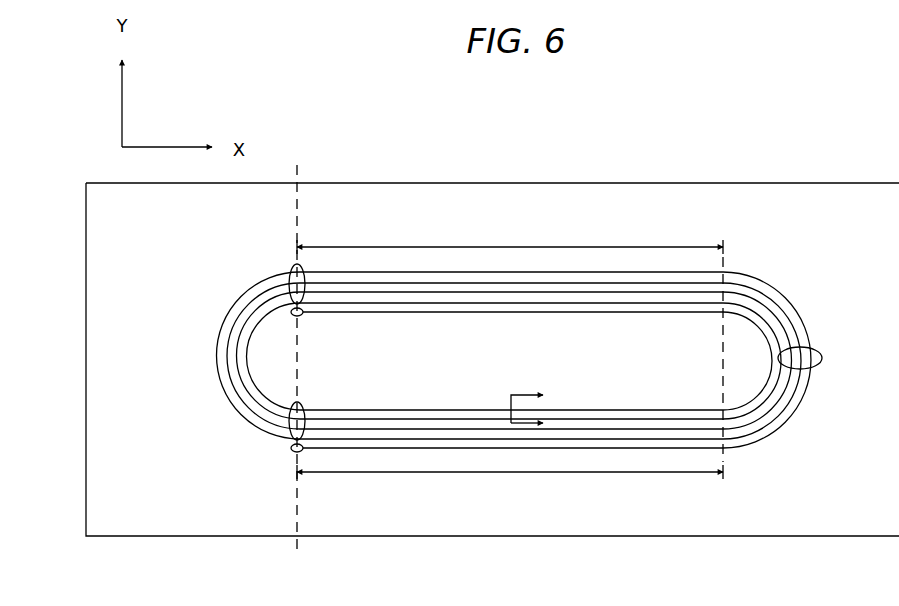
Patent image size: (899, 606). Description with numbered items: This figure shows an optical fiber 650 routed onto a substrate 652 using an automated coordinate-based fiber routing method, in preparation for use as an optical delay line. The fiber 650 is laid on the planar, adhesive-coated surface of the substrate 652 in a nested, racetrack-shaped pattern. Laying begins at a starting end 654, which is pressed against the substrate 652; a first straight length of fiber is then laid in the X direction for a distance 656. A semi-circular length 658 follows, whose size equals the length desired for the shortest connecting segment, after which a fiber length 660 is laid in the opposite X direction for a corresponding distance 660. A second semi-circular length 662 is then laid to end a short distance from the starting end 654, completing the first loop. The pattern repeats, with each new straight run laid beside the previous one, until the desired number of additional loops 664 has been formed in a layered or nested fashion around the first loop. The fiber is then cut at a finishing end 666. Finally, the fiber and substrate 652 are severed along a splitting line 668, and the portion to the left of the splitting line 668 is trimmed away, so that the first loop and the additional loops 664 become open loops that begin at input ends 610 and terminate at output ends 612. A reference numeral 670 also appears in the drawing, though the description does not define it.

The optical fiber 650 is at (482, 105).
The substrate 652 is at (662, 536).
The starting end 654 is at (303, 314).
The distance 656 is at (493, 247).
The semi-circular length 658 is at (762, 334).
The fiber length 660 is at (538, 472).
The semi-circular length 662 is at (245, 377).
The additional loops 664 is at (823, 357).
The finishing end 666 is at (291, 452).
The splitting line 668 is at (298, 210).
The trace pitch 670 is at (550, 403).
The input ends 610 is at (290, 268).
The output ends 612 is at (304, 404).